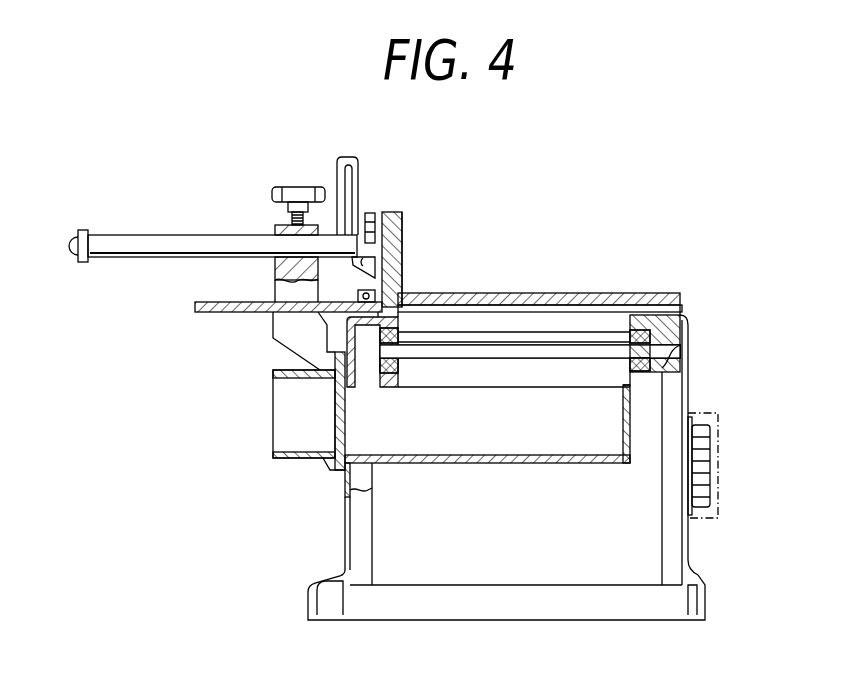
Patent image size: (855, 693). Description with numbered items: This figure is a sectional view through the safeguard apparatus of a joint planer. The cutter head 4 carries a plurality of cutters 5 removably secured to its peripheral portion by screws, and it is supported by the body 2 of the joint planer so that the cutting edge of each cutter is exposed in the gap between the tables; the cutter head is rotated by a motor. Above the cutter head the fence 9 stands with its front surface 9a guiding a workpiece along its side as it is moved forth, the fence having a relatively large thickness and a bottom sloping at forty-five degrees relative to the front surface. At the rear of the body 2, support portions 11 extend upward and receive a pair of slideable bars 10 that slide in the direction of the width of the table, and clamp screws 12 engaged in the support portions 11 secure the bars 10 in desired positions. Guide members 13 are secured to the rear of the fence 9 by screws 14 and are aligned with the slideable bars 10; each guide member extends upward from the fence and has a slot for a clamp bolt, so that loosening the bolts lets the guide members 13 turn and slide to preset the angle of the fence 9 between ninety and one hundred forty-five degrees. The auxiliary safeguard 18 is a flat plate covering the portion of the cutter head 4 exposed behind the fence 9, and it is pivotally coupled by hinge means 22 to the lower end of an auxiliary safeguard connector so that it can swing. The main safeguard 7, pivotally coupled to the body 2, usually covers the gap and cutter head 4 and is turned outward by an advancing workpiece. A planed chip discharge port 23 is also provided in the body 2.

The body 2 is at (343, 525).
The cutter head 4 is at (490, 306).
The cutters 5 is at (585, 332).
The main safeguard 7 is at (538, 300).
The fence 9 is at (404, 211).
The front surface 9a is at (403, 240).
The slideable bars 10 is at (146, 234).
The support portions 11 is at (275, 226).
The clamp screws 12 is at (290, 187).
The guide members 13 is at (349, 157).
The screws 14 is at (368, 213).
The auxiliary safeguard 18 is at (222, 314).
The hinge means 22 is at (357, 296).
The planed chip discharge port 23 is at (282, 408).